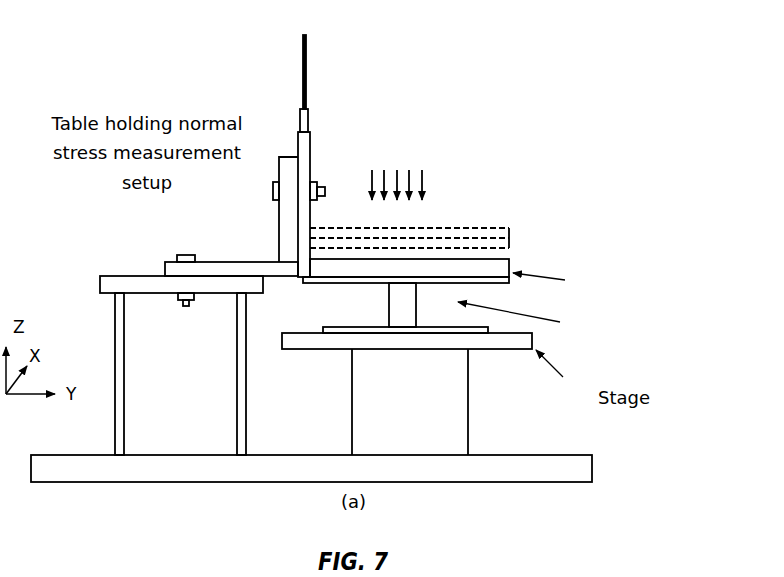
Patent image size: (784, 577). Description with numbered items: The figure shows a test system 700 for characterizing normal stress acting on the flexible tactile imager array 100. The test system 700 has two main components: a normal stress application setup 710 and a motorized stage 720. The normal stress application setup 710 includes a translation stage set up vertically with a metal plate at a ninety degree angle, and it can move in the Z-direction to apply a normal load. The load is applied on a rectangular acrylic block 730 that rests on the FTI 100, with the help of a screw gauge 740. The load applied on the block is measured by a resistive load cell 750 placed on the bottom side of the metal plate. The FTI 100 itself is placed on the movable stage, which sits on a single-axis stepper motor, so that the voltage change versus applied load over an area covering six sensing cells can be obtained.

The test system 700 is at (653, 78).
The normal stress application setup 710 is at (575, 257).
The motorized stage 720 is at (683, 187).
The rectangular acrylic block 730 is at (663, 313).
The screw gauge 740 is at (307, 48).
The resistive load cell 750 is at (652, 268).
The flexible tactile imager array 100 is at (331, 337).